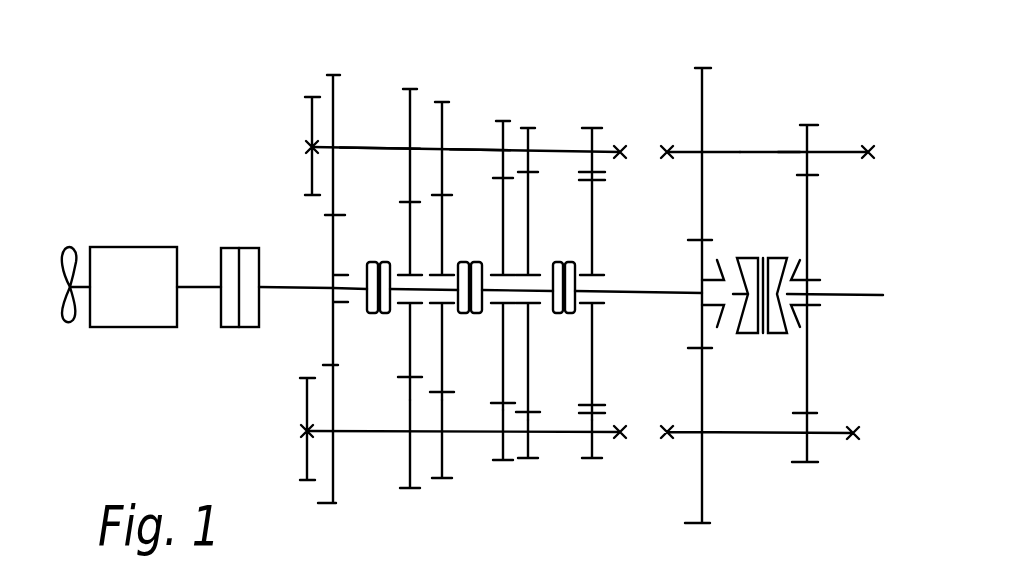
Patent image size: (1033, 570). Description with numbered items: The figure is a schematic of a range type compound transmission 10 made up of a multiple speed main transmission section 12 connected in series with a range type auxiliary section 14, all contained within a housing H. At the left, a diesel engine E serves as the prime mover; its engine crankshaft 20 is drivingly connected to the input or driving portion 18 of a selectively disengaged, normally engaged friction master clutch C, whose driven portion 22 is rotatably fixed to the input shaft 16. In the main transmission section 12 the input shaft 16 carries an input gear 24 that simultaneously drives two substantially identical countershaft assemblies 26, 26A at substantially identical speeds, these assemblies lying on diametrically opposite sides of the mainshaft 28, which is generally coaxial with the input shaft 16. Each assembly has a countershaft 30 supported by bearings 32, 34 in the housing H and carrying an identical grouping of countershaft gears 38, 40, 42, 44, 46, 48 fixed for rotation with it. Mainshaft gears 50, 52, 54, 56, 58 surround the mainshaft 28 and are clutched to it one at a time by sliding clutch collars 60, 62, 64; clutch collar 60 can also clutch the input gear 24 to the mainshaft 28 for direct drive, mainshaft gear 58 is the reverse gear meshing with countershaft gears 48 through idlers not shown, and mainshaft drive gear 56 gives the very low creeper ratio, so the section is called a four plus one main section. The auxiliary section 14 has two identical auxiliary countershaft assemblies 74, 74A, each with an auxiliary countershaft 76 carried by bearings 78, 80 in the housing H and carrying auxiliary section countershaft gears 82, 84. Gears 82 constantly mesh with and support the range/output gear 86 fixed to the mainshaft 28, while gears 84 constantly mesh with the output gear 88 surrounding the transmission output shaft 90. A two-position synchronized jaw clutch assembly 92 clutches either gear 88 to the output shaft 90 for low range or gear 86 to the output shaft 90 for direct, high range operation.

The diesel engine E is at (119, 287).
The friction master clutch C is at (214, 291).
The housing H is at (312, 122).
The range type compound transmission 10 is at (645, 132).
The multiple speed main transmission section 12 is at (471, 129).
The range type auxiliary section 14 is at (718, 112).
The input shaft 16 is at (287, 283).
The input or driving portion 18 is at (228, 328).
The engine crankshaft 20 is at (200, 282).
The driven portion 22 is at (247, 328).
The input gear 24 is at (333, 265).
The countershaft assembly 26 is at (495, 99).
The countershaft assembly 26A is at (473, 493).
The mainshaft 28 is at (667, 293).
The countershaft 30 is at (388, 150).
The bearing 32 is at (302, 430).
The bearing 34 is at (625, 437).
The countershaft gear 38 is at (320, 497).
The countershaft gear 40 is at (387, 323).
The countershaft gear 42 is at (456, 330).
The countershaft gear 44 is at (485, 339).
The countershaft gear 46 is at (542, 343).
The countershaft gear 48 is at (573, 343).
The mainshaft gear 50 is at (405, 340).
The mainshaft gear 52 is at (442, 372).
The mainshaft gear 54 is at (498, 370).
The mainshaft drive gear 56 is at (528, 373).
The mainshaft gear 58 is at (590, 365).
The sliding clutch collar 60 is at (367, 313).
The sliding clutch collar 62 is at (482, 268).
The sliding clutch collar 64 is at (550, 270).
The auxiliary countershaft assembly 74 is at (826, 132).
The auxiliary countershaft assembly 74A is at (759, 438).
The auxiliary countershaft 76 is at (787, 155).
The bearing 78 is at (668, 158).
The bearing 80 is at (873, 152).
The auxiliary section countershaft gear 82 is at (691, 263).
The auxiliary section countershaft gear 84 is at (806, 233).
The range/output gear 86 is at (700, 260).
The output gear 88 is at (807, 255).
The transmission output shaft 90 is at (838, 290).
The two-position synchronized jaw clutch assembly 92 is at (772, 338).